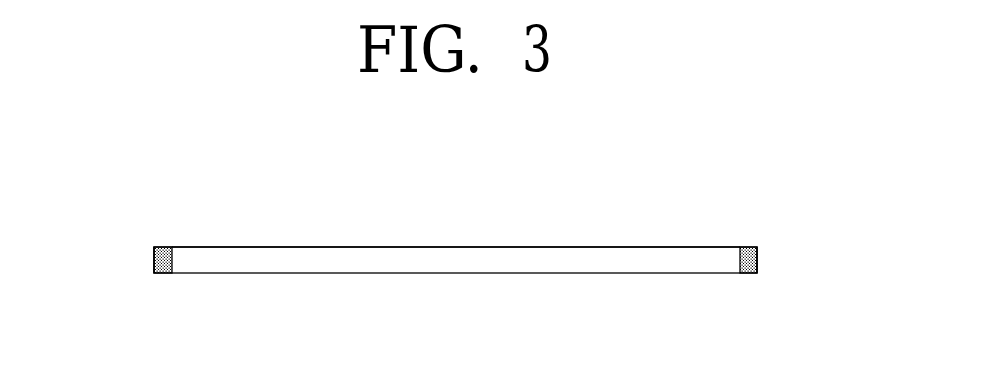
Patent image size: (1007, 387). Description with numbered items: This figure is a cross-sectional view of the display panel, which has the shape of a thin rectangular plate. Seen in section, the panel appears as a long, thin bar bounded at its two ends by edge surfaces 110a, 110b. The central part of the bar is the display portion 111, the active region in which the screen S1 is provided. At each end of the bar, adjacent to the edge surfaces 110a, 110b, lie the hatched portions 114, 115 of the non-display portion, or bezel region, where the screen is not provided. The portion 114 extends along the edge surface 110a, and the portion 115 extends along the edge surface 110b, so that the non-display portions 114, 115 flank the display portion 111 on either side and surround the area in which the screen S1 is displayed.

The display portion 111 is at (434, 268).
The portion of the non-display portion 114 is at (163, 273).
The portion of the non-display portion 115 is at (748, 273).
The edge surface 110a is at (154, 256).
The edge surface 110b is at (757, 262).
The screen S1 is at (422, 247).